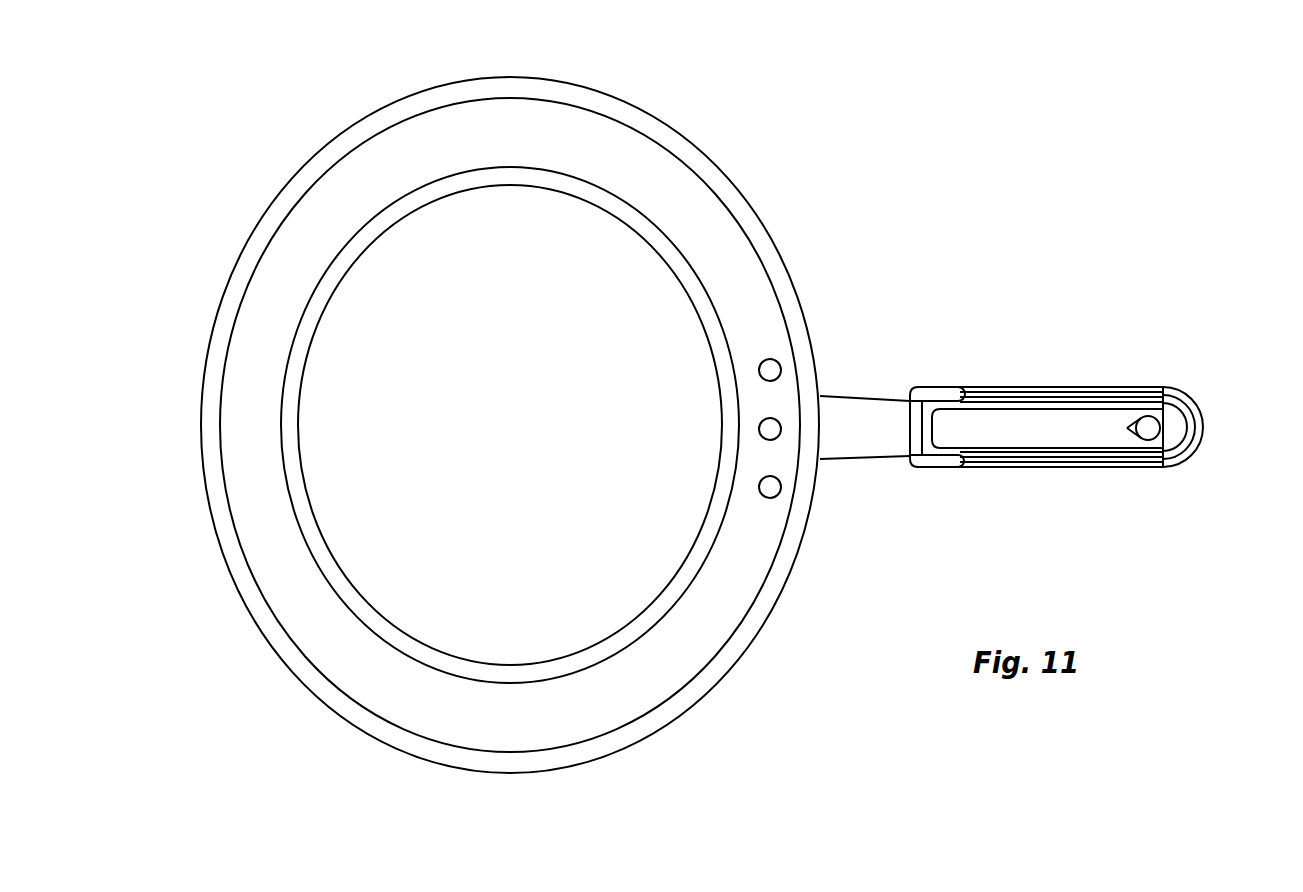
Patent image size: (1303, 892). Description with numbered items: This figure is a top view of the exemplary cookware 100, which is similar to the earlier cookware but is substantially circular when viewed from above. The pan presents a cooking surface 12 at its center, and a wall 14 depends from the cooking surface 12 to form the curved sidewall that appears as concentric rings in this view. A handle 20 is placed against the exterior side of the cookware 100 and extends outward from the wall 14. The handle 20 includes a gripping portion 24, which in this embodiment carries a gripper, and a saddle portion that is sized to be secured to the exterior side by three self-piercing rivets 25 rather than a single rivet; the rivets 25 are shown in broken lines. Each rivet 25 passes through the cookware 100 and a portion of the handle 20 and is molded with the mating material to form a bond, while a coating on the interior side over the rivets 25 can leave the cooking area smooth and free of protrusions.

The cookware 100 is at (838, 149).
The cooking surface 12 is at (513, 449).
The wall 14 is at (700, 627).
The self-piercing rivet 25 is at (770, 496).
The handle 20 is at (1197, 407).
The gripping portion 24 is at (1150, 467).